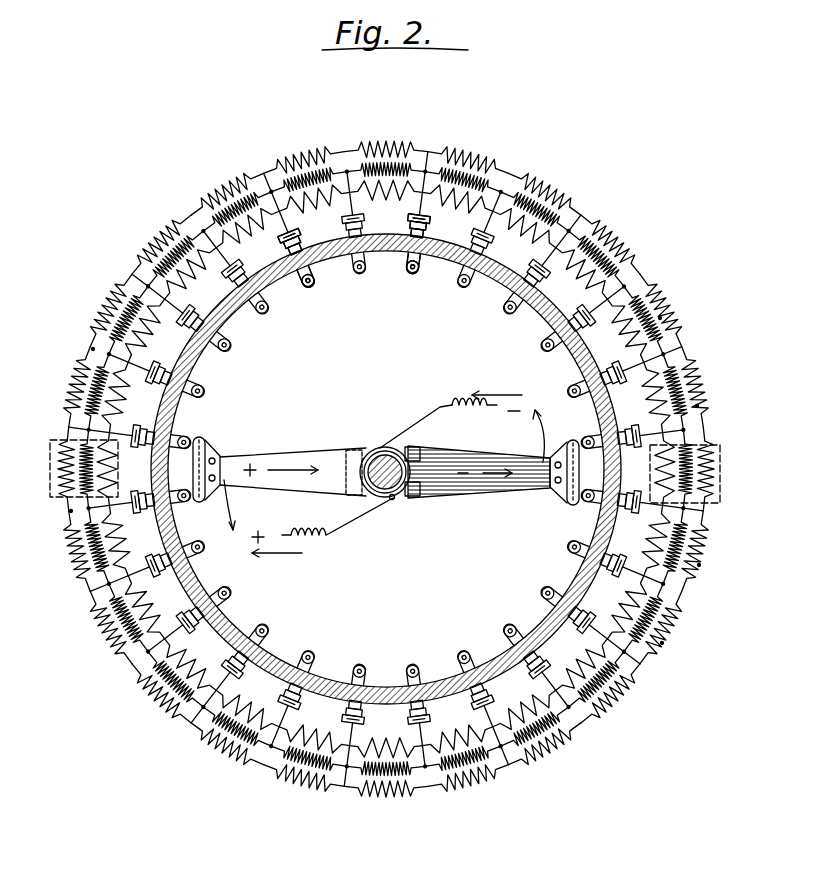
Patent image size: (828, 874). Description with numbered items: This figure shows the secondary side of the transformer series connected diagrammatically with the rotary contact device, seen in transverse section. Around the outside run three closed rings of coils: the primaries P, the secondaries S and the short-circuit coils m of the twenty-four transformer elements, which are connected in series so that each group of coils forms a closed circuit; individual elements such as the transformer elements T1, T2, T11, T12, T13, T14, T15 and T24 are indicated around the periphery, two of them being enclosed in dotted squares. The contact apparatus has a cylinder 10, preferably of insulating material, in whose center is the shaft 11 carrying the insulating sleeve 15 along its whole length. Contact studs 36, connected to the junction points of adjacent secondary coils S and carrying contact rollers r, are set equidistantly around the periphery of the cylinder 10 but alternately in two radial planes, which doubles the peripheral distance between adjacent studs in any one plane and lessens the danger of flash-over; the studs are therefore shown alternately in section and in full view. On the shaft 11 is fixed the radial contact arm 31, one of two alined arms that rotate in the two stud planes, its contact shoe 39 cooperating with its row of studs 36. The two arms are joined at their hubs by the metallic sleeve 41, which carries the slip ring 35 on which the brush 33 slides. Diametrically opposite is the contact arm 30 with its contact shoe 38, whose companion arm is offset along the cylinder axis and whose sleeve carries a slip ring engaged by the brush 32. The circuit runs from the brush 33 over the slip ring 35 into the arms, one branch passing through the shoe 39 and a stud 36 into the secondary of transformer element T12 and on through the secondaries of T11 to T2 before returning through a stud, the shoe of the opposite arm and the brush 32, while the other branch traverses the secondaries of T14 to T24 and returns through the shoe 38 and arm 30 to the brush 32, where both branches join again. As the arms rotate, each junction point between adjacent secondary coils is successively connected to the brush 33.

The cylinder 10 is at (290, 275).
The shaft 11 is at (393, 500).
The insulating sleeve 15 is at (356, 478).
The contact arm 30 is at (292, 453).
The radial contact arm 31 is at (497, 456).
The brush 32 is at (358, 514).
The brush 33 is at (426, 410).
The slip ring 35 is at (421, 448).
The contact studs 36 is at (240, 308).
The contact shoe 38 is at (206, 442).
The contact shoe 39 is at (556, 504).
The metallic sleeve 41 is at (377, 452).
The direction arrow a is at (389, 470).
The contact rollers r is at (410, 270).
The short-circuit coils m is at (178, 661).
The primaries P is at (539, 185).
The secondaries S is at (580, 222).
The transformer element T1 is at (50, 463).
The transformer element T2 is at (93, 350).
The transformer element T11 is at (663, 318).
The transformer element T12 is at (699, 407).
The transformer element T13 is at (720, 470).
The transformer element T14 is at (701, 564).
The transformer element T15 is at (664, 643).
The transformer element T24 is at (70, 512).